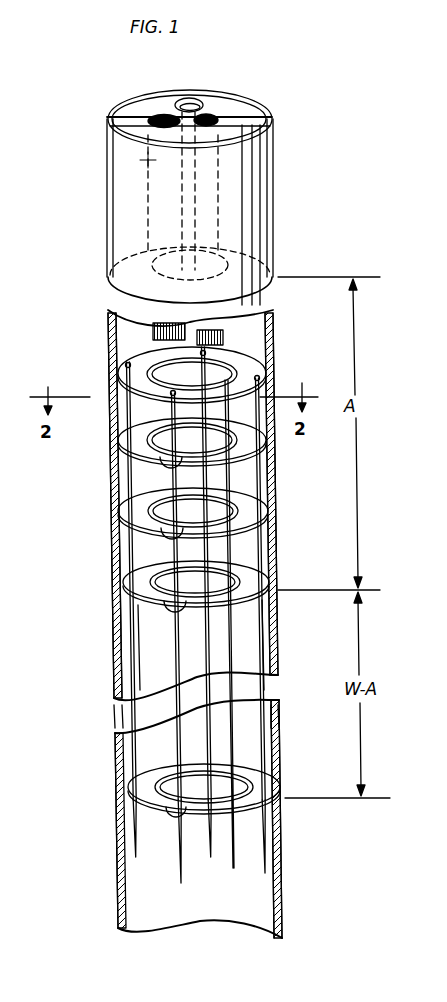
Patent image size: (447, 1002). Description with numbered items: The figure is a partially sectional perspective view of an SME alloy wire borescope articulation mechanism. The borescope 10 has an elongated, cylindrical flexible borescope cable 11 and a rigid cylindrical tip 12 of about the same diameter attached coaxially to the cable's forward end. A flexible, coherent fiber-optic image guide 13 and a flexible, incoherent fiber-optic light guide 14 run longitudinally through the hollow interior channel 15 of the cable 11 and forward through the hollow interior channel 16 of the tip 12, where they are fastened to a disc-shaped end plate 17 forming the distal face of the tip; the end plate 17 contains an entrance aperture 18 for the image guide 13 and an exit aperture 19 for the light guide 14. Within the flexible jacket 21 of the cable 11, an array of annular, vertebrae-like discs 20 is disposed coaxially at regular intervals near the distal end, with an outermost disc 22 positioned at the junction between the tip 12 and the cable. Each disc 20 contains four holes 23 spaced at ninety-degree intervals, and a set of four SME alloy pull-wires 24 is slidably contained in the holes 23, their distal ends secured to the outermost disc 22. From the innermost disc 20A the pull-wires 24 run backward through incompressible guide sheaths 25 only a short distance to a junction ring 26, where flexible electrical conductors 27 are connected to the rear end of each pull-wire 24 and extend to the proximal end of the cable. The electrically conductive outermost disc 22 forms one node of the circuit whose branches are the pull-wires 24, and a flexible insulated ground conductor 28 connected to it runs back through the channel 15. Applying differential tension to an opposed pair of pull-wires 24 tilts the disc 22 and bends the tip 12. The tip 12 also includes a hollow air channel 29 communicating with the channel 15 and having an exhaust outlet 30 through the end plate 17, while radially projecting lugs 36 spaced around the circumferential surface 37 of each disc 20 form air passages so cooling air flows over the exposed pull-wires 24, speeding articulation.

The borescope 10 is at (305, 152).
The borescope cable 11 is at (275, 347).
The borescope tip 12 is at (275, 223).
The fiber-optic image guide 13 is at (103, 132).
The fiber-optic light guide 14 is at (212, 197).
The hollow interior channel 15 is at (263, 487).
The hollow interior channel 16 is at (115, 260).
The end plate 17 is at (187, 97).
The entrance aperture 18 is at (167, 116).
The exit aperture 19 is at (213, 115).
The annular discs 20 is at (118, 375).
The innermost disc 20A is at (127, 587).
The flexible jacket 21 is at (110, 430).
The outermost disc 22 is at (115, 362).
The holes 23 is at (263, 372).
The pull-wires 24 is at (263, 468).
The guide sheaths 25 is at (250, 655).
The junction ring 26 is at (280, 790).
The electrical conductors 27 is at (265, 833).
The ground conductor 28 is at (234, 637).
The hollow air channel 29 is at (170, 110).
The exhaust outlet 30 is at (198, 108).
The lugs 36 is at (167, 613).
The circumferential surface 37 is at (195, 607).